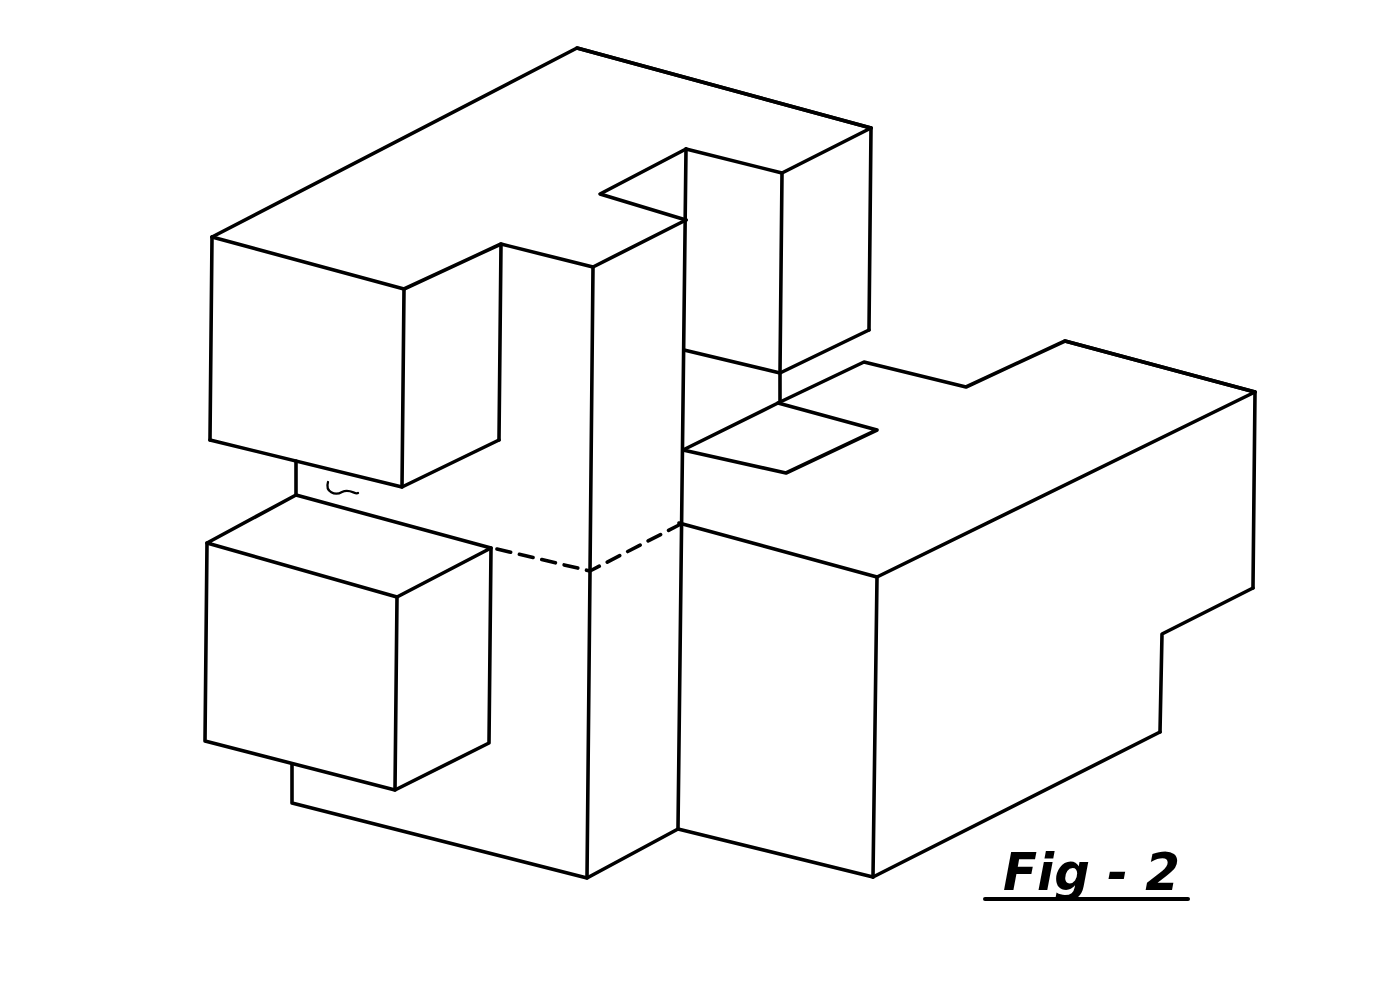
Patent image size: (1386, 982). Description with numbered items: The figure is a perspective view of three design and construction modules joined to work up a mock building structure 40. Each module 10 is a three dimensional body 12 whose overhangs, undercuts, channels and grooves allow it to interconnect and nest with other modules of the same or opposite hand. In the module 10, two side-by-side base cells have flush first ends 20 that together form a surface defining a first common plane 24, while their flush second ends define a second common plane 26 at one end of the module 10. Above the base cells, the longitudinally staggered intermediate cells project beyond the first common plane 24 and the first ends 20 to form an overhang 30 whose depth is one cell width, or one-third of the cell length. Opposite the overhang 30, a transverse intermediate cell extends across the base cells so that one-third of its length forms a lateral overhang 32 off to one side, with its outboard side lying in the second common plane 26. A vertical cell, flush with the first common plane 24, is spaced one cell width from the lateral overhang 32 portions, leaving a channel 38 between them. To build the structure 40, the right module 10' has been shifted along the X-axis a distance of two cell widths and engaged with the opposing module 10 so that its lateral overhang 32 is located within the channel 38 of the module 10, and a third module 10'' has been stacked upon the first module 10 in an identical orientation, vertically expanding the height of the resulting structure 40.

The design and construction module 10 is at (582, 527).
The right module 10' is at (1026, 609).
The third module 10'' is at (493, 267).
The three dimensional body 12 is at (738, 88).
The first ends 20 is at (1162, 712).
The first common plane 24 is at (337, 503).
The second common plane 26 is at (800, 819).
The overhang 30 is at (232, 443).
The lateral overhang 32 is at (858, 340).
The channel 38 is at (702, 187).
The mock building structure 40 is at (1083, 269).